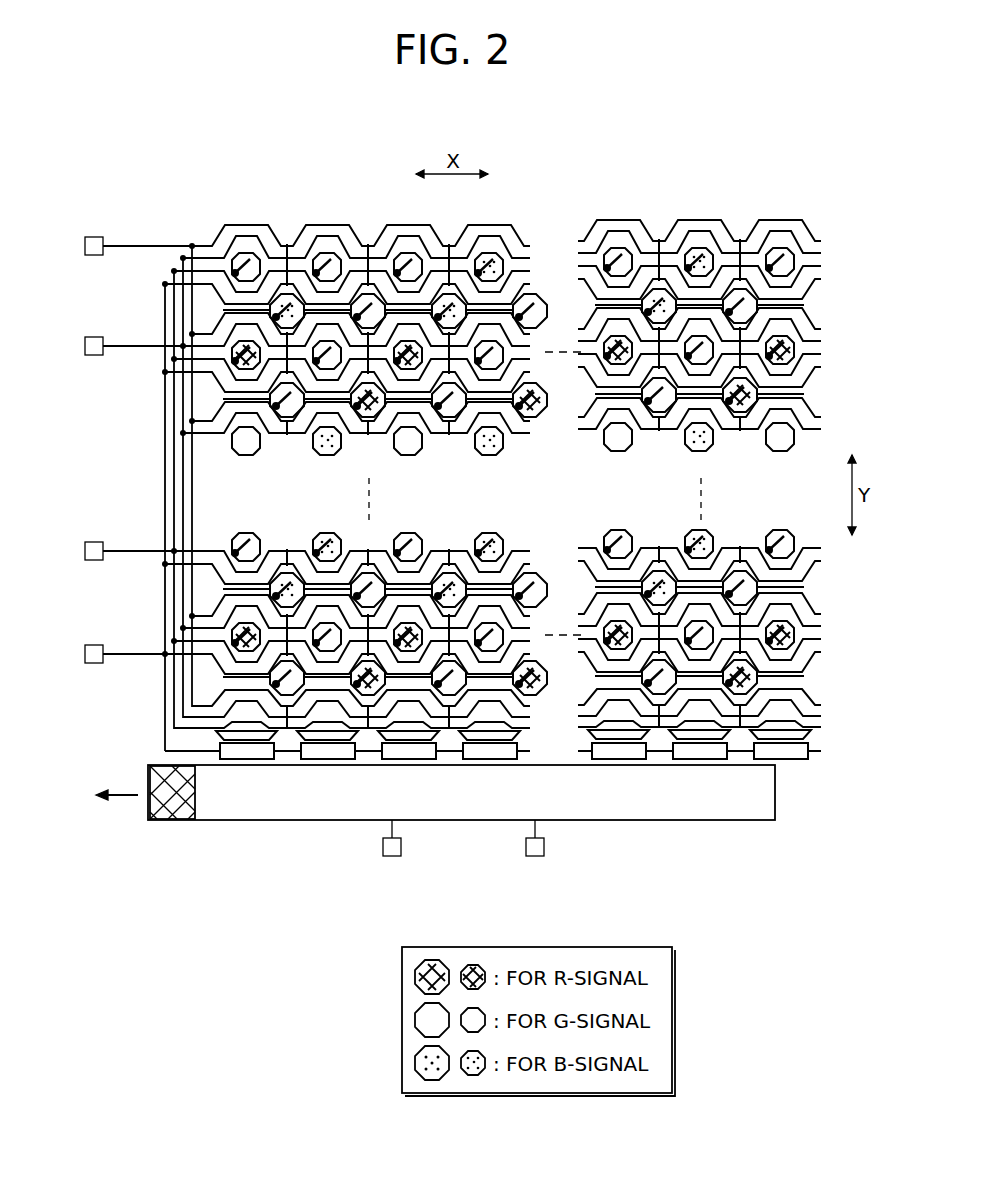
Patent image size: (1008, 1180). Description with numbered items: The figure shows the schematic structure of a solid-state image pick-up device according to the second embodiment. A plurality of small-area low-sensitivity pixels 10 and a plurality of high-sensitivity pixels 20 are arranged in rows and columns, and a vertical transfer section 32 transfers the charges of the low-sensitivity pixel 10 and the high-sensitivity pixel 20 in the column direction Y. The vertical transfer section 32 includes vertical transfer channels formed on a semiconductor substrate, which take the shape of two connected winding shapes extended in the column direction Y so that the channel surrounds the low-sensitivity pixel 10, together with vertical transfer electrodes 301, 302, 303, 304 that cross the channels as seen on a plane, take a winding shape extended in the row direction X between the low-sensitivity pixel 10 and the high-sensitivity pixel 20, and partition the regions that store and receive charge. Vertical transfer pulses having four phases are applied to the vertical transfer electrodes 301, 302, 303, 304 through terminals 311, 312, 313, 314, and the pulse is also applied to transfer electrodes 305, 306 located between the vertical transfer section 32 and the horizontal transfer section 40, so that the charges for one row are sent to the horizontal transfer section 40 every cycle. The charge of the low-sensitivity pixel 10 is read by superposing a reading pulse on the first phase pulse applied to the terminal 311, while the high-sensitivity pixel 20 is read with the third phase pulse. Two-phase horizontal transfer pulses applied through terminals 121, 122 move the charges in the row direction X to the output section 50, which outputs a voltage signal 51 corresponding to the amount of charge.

The low-sensitivity pixel 10 is at (334, 534).
The high-sensitivity pixel 20 is at (293, 415).
The vertical transfer section 32 is at (245, 226).
The horizontal transfer section 40 is at (688, 802).
The output section 50 is at (178, 822).
The voltage signal 51 is at (134, 799).
The terminal 121 is at (535, 860).
The terminal 122 is at (390, 860).
The vertical transfer electrode 301 is at (821, 264).
The vertical transfer electrode 302 is at (821, 279).
The vertical transfer electrode 303 is at (821, 329).
The vertical transfer electrode 304 is at (821, 341).
The transfer electrode 305 is at (821, 728).
The transfer electrode 306 is at (821, 751).
The terminal 311 is at (82, 552).
The terminal 312 is at (82, 655).
The terminal 313 is at (82, 247).
The terminal 314 is at (82, 347).